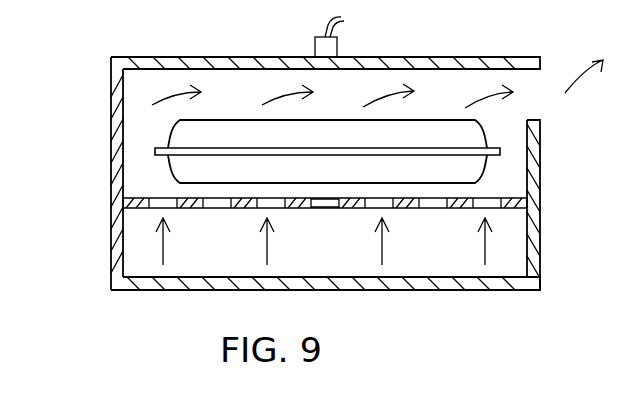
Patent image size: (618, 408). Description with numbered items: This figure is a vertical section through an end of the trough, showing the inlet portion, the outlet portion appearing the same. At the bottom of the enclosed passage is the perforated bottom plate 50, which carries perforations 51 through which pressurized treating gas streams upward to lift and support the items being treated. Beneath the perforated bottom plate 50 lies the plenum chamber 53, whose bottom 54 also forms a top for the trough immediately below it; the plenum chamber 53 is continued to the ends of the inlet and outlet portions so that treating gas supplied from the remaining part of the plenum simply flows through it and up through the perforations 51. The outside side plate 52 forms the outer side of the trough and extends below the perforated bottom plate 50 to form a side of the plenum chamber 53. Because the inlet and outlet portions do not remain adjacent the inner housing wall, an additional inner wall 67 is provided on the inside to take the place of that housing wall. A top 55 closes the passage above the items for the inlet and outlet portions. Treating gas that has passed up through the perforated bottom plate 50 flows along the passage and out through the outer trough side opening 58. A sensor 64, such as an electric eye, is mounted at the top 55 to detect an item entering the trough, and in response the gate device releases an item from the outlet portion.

The perforated bottom plate 50 is at (350, 206).
The perforations 51 is at (322, 205).
The outside side plate 52 is at (533, 172).
The plenum chamber 53 is at (513, 250).
The bottom of plenum chamber 54 is at (432, 287).
The top 55 is at (250, 57).
The outer trough side opening 58 is at (530, 92).
The sensor 64 is at (337, 43).
The inner wall of inlet portion 67 is at (113, 163).